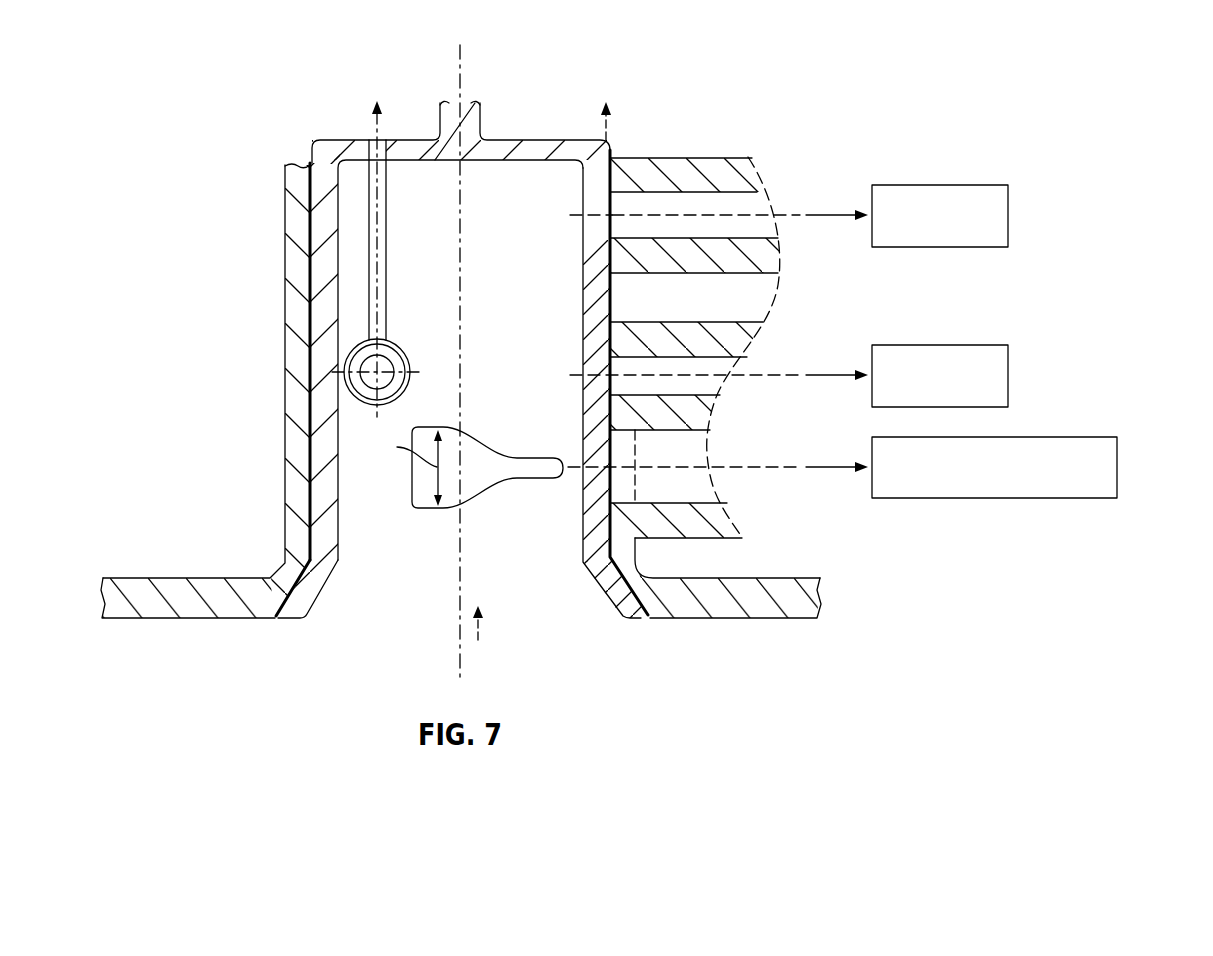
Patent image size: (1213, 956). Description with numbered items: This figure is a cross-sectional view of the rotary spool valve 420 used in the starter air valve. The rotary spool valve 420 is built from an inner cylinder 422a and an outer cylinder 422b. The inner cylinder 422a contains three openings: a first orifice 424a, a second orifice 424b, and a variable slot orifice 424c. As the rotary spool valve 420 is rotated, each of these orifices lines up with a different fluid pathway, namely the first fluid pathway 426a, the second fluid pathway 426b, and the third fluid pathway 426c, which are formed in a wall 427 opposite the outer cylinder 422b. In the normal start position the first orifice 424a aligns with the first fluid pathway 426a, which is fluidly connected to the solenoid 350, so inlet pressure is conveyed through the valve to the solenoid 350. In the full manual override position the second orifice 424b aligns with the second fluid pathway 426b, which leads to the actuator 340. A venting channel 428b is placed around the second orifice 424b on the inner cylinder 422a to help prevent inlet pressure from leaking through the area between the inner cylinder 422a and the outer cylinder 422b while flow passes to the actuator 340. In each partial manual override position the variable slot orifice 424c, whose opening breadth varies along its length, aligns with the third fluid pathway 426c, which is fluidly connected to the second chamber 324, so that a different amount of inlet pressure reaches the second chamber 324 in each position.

The rotary spool valve 420 is at (197, 90).
The inner cylinder 422a is at (328, 315).
The outer cylinder 422b is at (298, 412).
The first orifice 424a is at (580, 207).
The second orifice 424b is at (390, 353).
The variable slot orifice 424c is at (418, 508).
The first fluid pathway 426a is at (756, 202).
The second fluid pathway 426b is at (722, 365).
The third fluid pathway 426c is at (714, 490).
The wall 427 is at (605, 170).
The venting channel 428b is at (402, 392).
The solenoid 350 is at (1008, 215).
The actuator 340 is at (1008, 375).
The second chamber 324 is at (1117, 467).